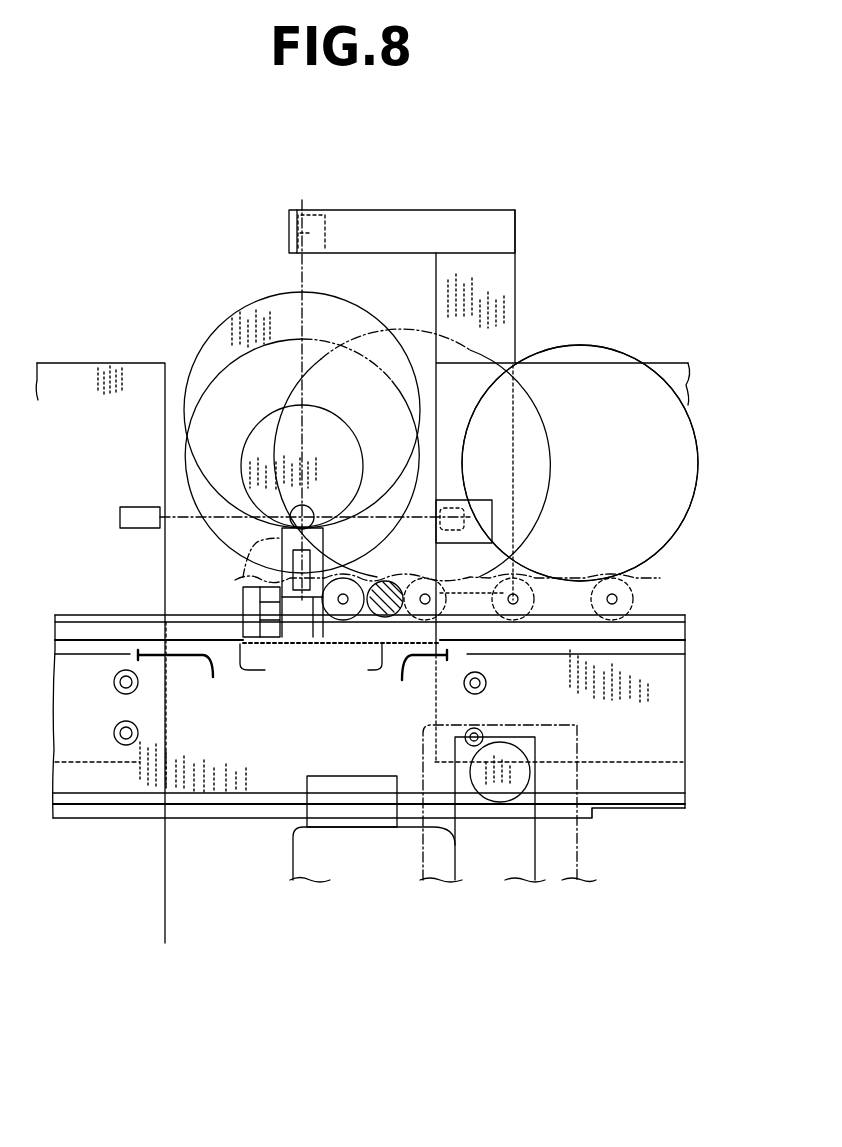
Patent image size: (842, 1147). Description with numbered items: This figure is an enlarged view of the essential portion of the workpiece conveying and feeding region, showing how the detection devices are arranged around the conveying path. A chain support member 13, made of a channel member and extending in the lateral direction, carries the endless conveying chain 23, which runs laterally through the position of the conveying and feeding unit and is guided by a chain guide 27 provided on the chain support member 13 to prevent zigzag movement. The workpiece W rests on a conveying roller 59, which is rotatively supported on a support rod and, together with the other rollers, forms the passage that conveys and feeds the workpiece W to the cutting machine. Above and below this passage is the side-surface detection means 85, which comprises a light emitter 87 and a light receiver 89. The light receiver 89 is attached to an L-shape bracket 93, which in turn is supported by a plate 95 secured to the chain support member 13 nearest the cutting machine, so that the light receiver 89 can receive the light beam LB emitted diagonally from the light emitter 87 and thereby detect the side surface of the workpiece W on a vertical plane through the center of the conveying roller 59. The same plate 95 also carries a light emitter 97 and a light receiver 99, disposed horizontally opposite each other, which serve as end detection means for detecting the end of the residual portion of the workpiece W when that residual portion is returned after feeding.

The side-surface detection means 85 is at (288, 206).
The light receiver 89 is at (312, 231).
The L-shape bracket 93 is at (398, 232).
The plate 95 is at (678, 363).
The light emitter 97 is at (476, 522).
The light receiver 99 is at (132, 517).
The conveying roller 59 is at (250, 567).
The light emitter 87 is at (298, 644).
The conveying chain 23 is at (656, 583).
The chain guide 27 is at (668, 631).
The chain support member 13 is at (680, 716).
The workpiece W is at (228, 318).
The light beam LB is at (300, 262).